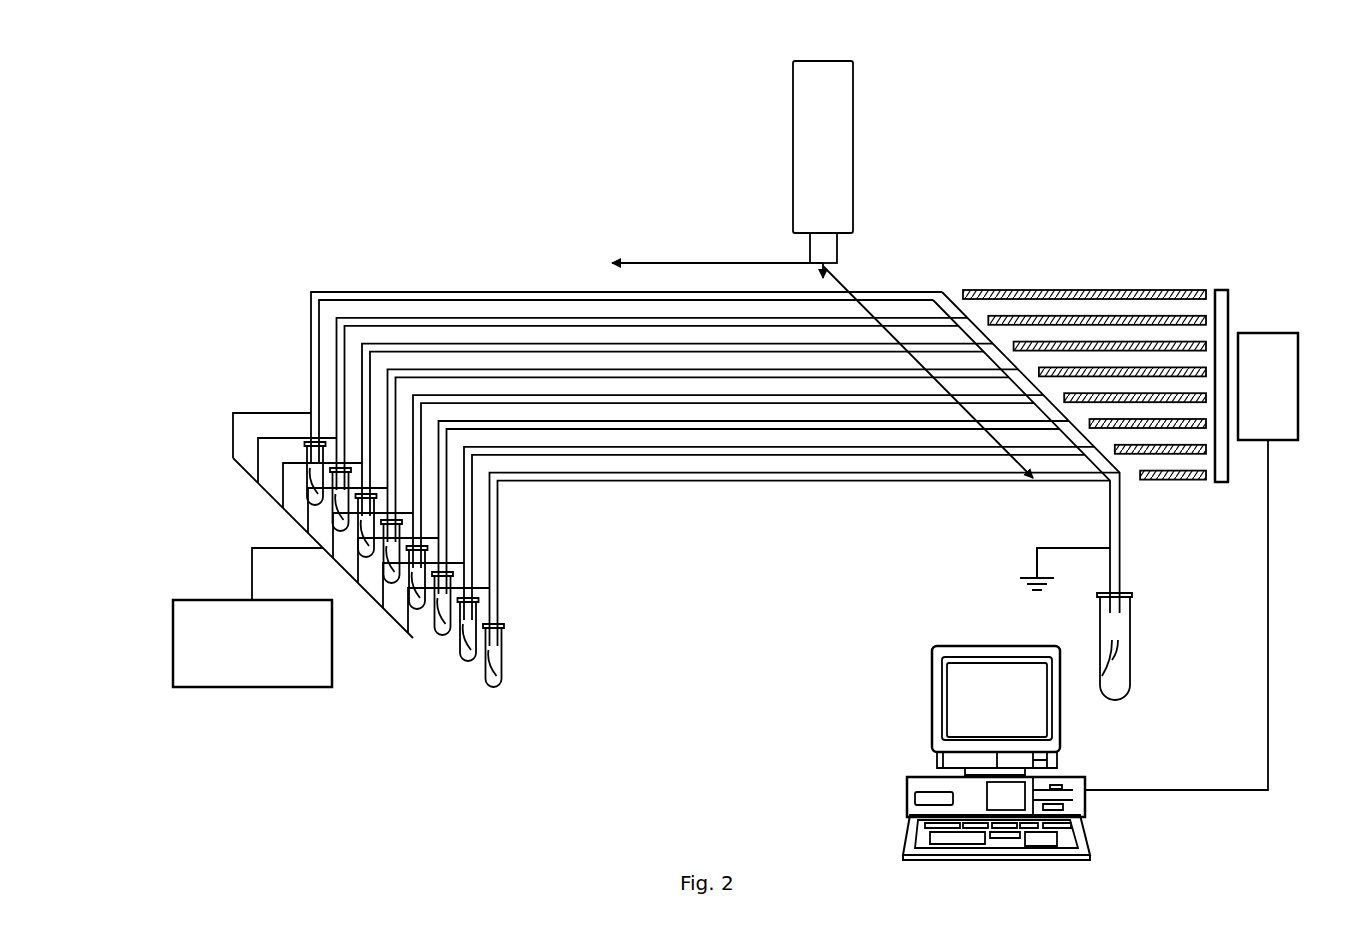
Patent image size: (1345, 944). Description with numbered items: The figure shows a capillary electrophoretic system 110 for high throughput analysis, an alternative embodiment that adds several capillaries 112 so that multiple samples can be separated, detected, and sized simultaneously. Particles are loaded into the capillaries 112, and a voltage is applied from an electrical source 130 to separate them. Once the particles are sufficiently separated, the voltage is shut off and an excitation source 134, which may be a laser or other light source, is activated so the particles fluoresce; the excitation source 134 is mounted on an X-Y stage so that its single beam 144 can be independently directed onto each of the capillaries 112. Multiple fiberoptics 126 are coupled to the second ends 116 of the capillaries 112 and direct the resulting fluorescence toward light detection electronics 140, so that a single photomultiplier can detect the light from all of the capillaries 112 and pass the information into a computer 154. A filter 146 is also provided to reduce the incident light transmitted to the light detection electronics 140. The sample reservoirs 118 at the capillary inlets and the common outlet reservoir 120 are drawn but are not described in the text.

The capillary electrophoretic system 110 is at (836, 110).
The capillaries 112 is at (422, 343).
The second ends 116 is at (920, 289).
The sample reservoirs 118 is at (470, 665).
The common outlet reservoir 120 is at (1124, 645).
The fiberoptics 126 is at (1157, 340).
The electrical source 130 is at (272, 657).
The excitation source 134 is at (885, 89).
The light detection electronics 140 is at (1288, 397).
The single beam 144 is at (833, 270).
The filter 146 is at (1230, 306).
The computer 154 is at (932, 733).